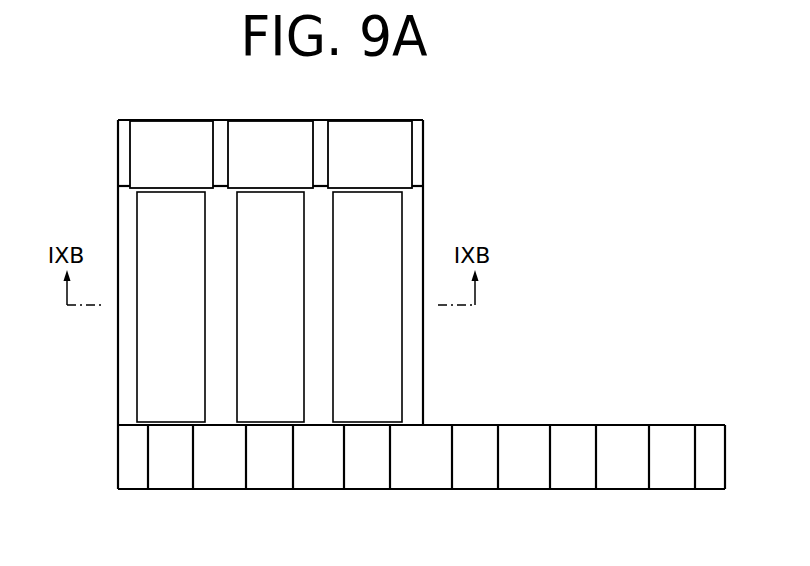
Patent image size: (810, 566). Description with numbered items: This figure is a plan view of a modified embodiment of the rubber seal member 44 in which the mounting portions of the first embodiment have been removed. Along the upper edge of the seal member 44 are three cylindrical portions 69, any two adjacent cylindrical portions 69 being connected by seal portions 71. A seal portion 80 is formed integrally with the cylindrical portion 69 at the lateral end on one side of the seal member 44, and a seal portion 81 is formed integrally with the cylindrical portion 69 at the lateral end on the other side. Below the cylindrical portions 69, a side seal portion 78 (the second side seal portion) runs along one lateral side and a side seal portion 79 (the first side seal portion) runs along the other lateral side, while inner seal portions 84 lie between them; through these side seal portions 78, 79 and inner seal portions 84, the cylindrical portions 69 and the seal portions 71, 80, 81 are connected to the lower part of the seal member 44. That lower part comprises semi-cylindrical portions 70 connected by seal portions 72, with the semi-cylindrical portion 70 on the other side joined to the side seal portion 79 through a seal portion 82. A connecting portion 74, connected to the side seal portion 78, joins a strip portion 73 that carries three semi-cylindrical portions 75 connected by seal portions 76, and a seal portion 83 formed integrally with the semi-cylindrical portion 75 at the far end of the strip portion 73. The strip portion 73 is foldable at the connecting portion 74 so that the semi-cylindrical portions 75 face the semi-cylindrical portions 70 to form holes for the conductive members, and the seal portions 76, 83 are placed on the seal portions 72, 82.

The seal member 44 is at (511, 200).
The cylindrical portion 69 is at (168, 135).
The semi-cylindrical portion 70 is at (167, 482).
The seal portion 71 is at (218, 133).
The seal portion 72 is at (219, 482).
The strip portion 73 is at (725, 490).
The connecting portion 74 is at (417, 482).
The semi-cylindrical portion 75 is at (474, 482).
The seal portion 76 is at (527, 482).
The side seal portion 78 is at (415, 219).
The side seal portion 79 is at (118, 211).
The seal portion 80 is at (422, 150).
The seal portion 81 is at (118, 152).
The seal portion 82 is at (118, 457).
The seal portion 83 is at (716, 459).
The inner seal portion 84 is at (217, 278).